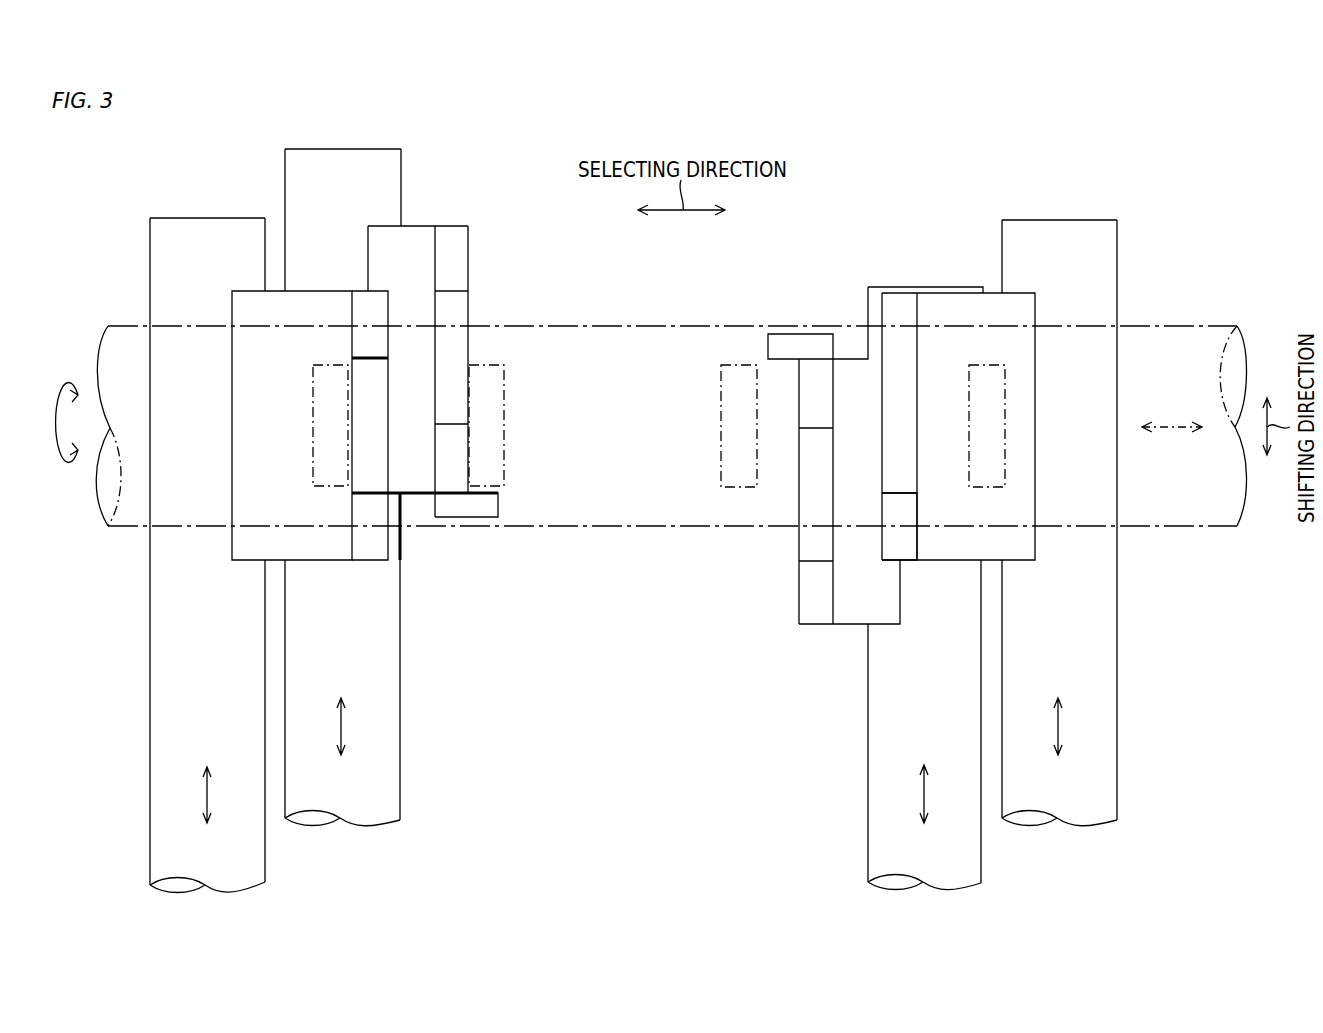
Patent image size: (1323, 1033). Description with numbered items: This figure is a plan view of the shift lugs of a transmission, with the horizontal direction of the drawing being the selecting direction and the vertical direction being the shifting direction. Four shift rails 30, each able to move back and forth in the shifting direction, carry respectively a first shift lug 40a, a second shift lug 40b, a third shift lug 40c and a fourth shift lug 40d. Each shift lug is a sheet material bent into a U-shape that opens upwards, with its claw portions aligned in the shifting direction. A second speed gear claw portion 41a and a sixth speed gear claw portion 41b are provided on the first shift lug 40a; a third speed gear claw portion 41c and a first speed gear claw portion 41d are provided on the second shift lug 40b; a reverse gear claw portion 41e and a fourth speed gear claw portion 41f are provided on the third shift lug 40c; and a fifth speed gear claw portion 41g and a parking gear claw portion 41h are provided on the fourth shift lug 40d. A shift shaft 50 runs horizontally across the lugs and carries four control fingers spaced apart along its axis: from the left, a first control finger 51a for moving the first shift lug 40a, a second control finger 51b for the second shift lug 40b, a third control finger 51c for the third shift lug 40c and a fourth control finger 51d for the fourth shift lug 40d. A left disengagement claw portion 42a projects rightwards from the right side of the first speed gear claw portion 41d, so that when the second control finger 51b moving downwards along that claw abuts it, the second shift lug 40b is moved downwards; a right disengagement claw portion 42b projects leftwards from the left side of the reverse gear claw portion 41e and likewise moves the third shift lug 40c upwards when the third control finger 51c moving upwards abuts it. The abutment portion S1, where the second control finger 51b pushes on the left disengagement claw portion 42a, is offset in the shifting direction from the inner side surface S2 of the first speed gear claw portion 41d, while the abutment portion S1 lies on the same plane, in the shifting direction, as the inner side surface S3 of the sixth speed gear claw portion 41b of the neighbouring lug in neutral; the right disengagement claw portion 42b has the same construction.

The shift rail 30 is at (177, 748).
The first shift lug 40a is at (313, 300).
The second shift lug 40b is at (423, 232).
The third shift lug 40c is at (855, 373).
The fourth shift lug 40d is at (965, 303).
The second speed gear claw portion 41a is at (362, 295).
The sixth speed gear claw portion 41b is at (378, 551).
The third speed gear claw portion 41c is at (461, 251).
The first speed gear claw portion 41d is at (450, 481).
The reverse gear claw portion 41e is at (818, 370).
The fourth speed gear claw portion 41f is at (810, 616).
The fifth speed gear claw portion 41g is at (898, 303).
The parking gear claw portion 41h is at (890, 552).
The left disengagement claw portion 42a is at (489, 510).
The right disengagement claw portion 42b is at (778, 343).
The shift shaft 50 is at (1183, 535).
The first control finger 51a is at (318, 398).
The second control finger 51b is at (486, 402).
The third control finger 51c is at (722, 402).
The fourth control finger 51d is at (1005, 402).
The abutment portion S1 is at (487, 486).
The inner side surface S2 is at (450, 422).
The inner side surface S3 is at (370, 490).